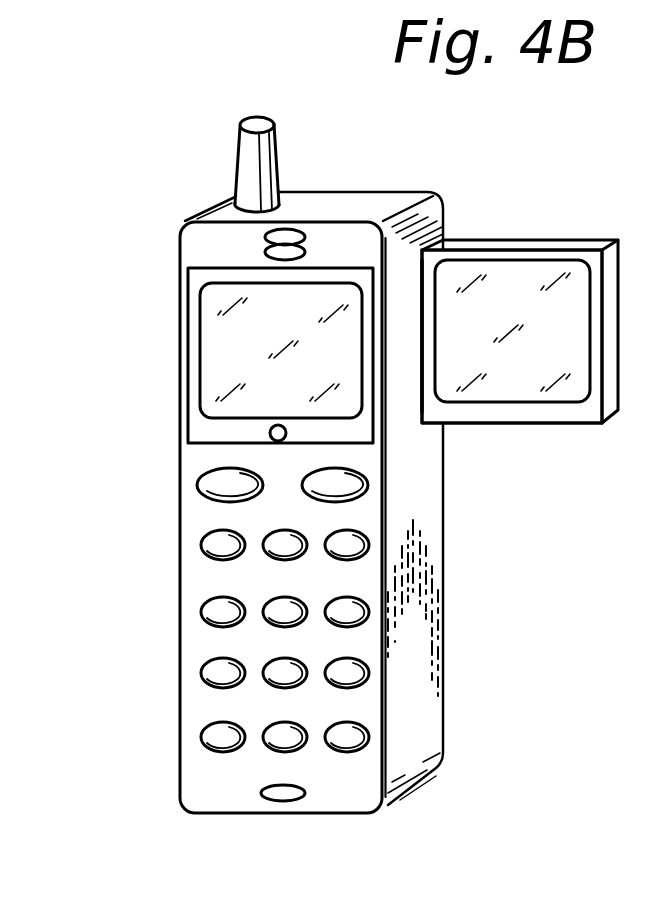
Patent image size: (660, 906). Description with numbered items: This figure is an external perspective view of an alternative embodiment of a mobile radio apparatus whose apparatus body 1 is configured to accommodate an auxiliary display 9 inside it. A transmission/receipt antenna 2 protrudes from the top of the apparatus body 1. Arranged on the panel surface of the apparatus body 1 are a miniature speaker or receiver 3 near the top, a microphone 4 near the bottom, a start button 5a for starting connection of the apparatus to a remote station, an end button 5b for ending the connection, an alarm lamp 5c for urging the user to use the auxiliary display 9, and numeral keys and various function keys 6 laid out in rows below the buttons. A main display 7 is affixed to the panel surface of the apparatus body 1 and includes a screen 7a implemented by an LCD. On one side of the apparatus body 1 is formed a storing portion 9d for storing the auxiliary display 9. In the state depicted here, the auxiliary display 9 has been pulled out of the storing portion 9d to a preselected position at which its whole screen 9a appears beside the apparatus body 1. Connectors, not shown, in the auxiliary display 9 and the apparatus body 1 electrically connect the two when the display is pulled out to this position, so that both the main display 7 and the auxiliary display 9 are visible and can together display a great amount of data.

The apparatus body 1 is at (423, 717).
The transmission/receipt antenna 2 is at (248, 158).
The miniature speaker or receiver 3 is at (287, 237).
The microphone 4 is at (283, 797).
The start button 5a is at (215, 478).
The end button 5b is at (366, 485).
The alarm lamp 5c is at (288, 432).
The numeral keys and various function keys 6 is at (160, 743).
The main display 7 is at (188, 341).
The screen 7a is at (227, 378).
The auxiliary display 9 is at (570, 415).
The screen 9a is at (550, 272).
The storing portion 9d is at (423, 303).